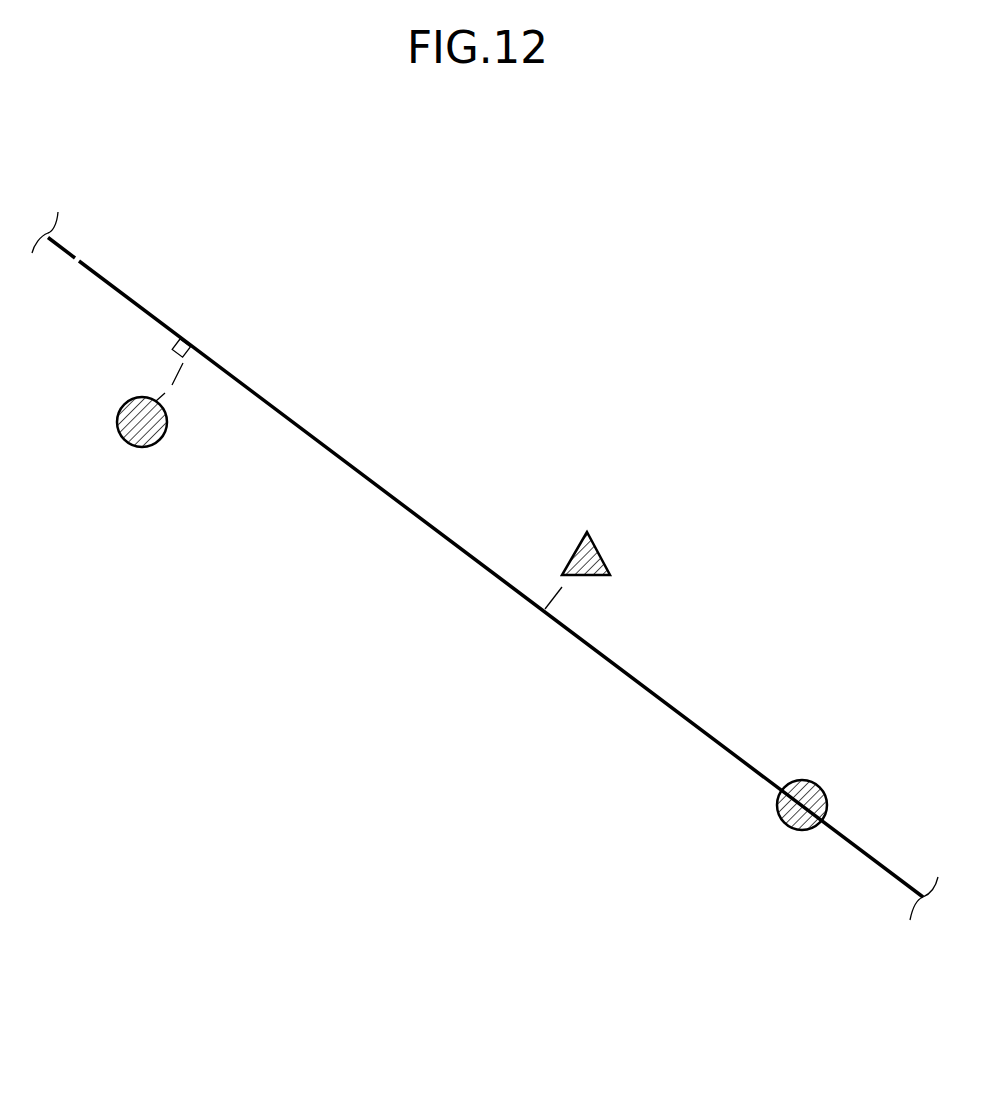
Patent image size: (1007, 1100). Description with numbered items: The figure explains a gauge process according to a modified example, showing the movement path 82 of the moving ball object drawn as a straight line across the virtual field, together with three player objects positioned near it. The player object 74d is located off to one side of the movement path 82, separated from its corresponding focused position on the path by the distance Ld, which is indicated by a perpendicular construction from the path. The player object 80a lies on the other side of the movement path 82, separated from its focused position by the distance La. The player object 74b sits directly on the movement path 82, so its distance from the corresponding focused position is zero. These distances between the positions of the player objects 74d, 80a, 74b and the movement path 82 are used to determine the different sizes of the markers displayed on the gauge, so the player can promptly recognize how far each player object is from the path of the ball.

The movement path 82 is at (372, 480).
The player object 74d is at (140, 448).
The player object 74b is at (802, 831).
The player object 80a is at (600, 552).
The distance Ld is at (172, 385).
The distance La is at (562, 588).